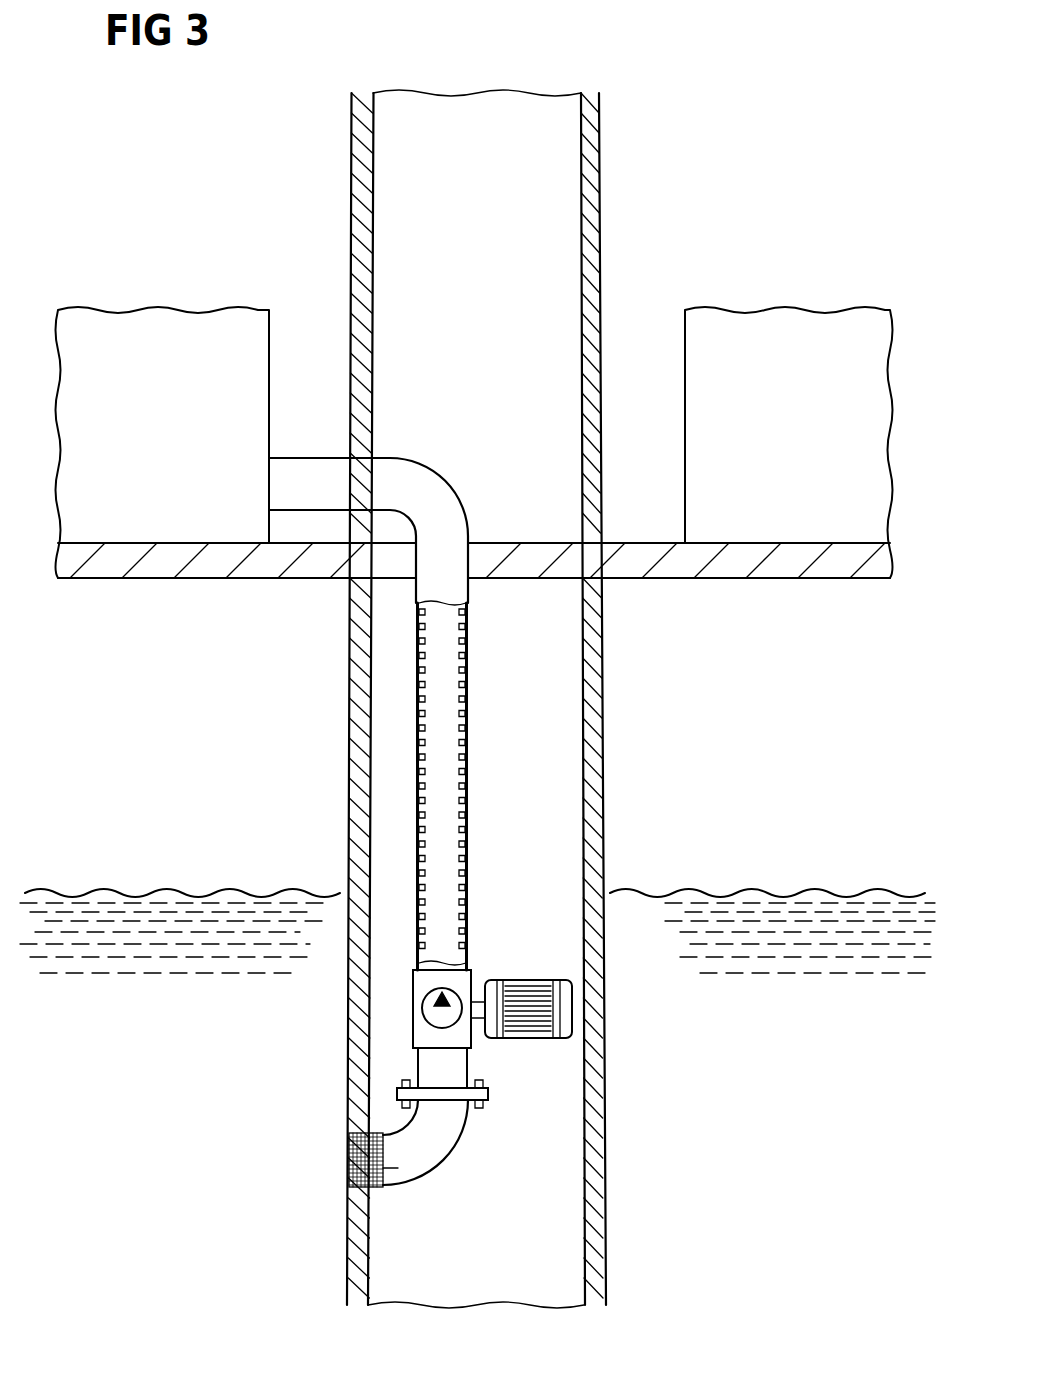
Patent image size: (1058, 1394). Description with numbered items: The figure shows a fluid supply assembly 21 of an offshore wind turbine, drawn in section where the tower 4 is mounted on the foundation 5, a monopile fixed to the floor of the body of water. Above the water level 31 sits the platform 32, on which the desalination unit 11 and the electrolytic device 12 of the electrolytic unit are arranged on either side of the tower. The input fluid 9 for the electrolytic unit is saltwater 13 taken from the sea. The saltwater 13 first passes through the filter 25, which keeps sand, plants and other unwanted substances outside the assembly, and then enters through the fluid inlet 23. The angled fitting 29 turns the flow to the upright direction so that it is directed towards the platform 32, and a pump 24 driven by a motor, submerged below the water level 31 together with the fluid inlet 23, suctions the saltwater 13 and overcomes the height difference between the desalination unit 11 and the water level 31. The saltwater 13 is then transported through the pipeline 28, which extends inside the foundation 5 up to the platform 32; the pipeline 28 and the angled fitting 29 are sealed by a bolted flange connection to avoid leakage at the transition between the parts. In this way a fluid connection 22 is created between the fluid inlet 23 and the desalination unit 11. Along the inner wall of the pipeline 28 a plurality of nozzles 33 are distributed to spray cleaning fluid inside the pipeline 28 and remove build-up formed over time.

The tower 4 is at (600, 192).
The foundation 5 is at (605, 692).
The desalination unit 11 is at (160, 322).
The electrolytic device 12 is at (797, 322).
The platform 32 is at (826, 565).
The fluid supply assembly 21 is at (176, 733).
The fluid connection 22 is at (345, 826).
The pipeline 28 is at (467, 688).
The nozzles 33 is at (467, 740).
The pump 24 is at (455, 995).
The angled fitting 29 is at (445, 1143).
The filter 25 is at (398, 1168).
The fluid inlet 23 is at (346, 1160).
The water level 31 is at (828, 893).
The input fluid 9 is at (87, 1094).
The saltwater 13 is at (140, 1094).